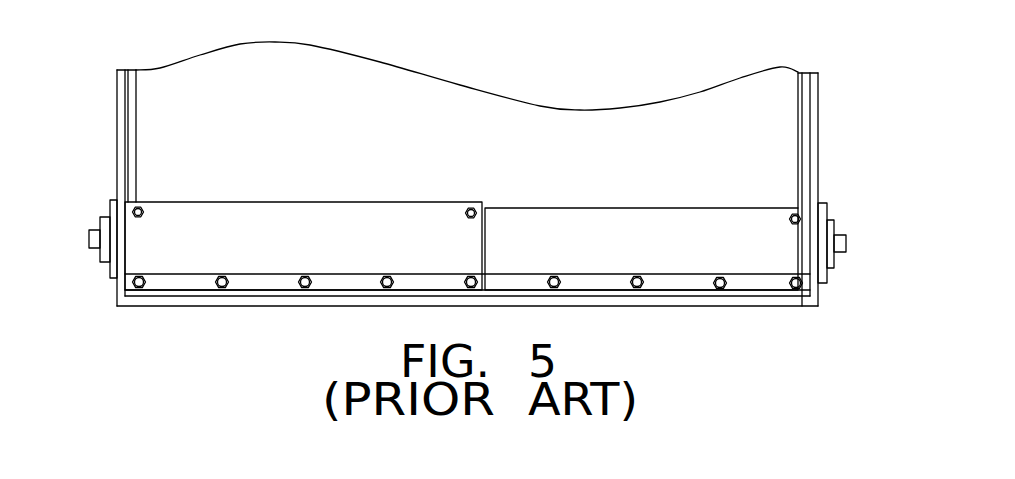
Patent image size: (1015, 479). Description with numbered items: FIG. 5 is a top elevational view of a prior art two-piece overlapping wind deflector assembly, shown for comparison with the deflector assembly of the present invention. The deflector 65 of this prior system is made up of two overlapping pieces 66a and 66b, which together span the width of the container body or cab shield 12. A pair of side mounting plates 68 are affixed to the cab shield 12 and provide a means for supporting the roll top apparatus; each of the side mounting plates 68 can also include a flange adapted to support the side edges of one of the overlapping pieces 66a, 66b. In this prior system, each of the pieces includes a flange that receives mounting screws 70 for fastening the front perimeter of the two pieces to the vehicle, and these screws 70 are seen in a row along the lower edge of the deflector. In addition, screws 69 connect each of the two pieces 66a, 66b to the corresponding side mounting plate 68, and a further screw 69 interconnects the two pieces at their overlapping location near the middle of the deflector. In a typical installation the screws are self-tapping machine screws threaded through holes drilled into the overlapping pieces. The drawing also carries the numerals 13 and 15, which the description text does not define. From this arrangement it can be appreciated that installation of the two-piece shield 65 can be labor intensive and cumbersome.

The cab shield 12 is at (813, 137).
The web material 13 is at (413, 105).
The shaft end 15 is at (847, 248).
The deflector 65 is at (480, 203).
The overlapping piece 66a is at (342, 258).
The overlapping piece 66b is at (672, 258).
The side mounting plate 68 is at (824, 208).
The screw 69 is at (145, 210).
The mounting screw 70 is at (390, 275).